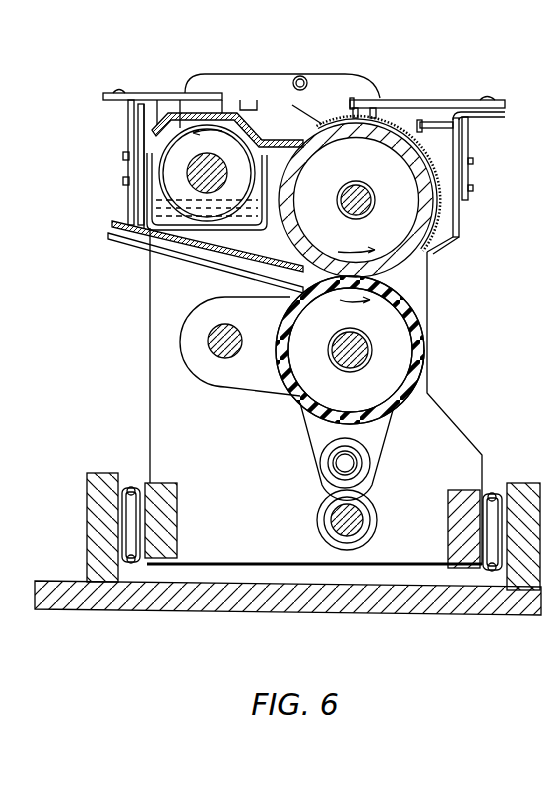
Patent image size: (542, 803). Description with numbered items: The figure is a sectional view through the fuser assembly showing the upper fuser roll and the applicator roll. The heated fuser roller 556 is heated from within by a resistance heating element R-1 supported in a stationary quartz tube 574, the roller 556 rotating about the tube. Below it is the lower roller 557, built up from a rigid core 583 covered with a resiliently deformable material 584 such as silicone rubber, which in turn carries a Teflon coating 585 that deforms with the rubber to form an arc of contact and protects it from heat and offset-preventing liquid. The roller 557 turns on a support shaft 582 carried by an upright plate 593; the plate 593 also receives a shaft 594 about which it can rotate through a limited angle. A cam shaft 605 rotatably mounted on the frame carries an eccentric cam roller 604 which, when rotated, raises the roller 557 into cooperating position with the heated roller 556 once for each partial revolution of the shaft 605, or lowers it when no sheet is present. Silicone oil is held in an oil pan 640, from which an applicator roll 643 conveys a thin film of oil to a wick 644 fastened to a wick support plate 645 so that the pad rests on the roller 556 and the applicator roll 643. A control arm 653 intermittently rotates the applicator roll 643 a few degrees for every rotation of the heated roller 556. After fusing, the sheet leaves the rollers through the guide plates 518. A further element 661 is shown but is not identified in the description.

The wick 644 is at (190, 117).
The wick support plate 645 is at (230, 115).
The control arm 653 is at (378, 96).
The applicator roll 643 is at (163, 148).
The oil pan 640 is at (150, 222).
The quartz tube 574 is at (355, 182).
The resistance heating element R-1 is at (372, 196).
The heated fuser roller 556 is at (426, 250).
The guide plates 518 is at (126, 243).
The scraper bar 661 is at (167, 252).
The lower roller 557 is at (412, 300).
The support shaft 582 is at (373, 350).
The rigid core 583 is at (393, 363).
The resiliently deformable material 584 is at (407, 378).
The Teflon coating 585 is at (418, 393).
The shaft 594 is at (208, 347).
The upright plate 593 is at (217, 390).
The cam shaft 605 is at (367, 500).
The cam roller 604 is at (365, 548).